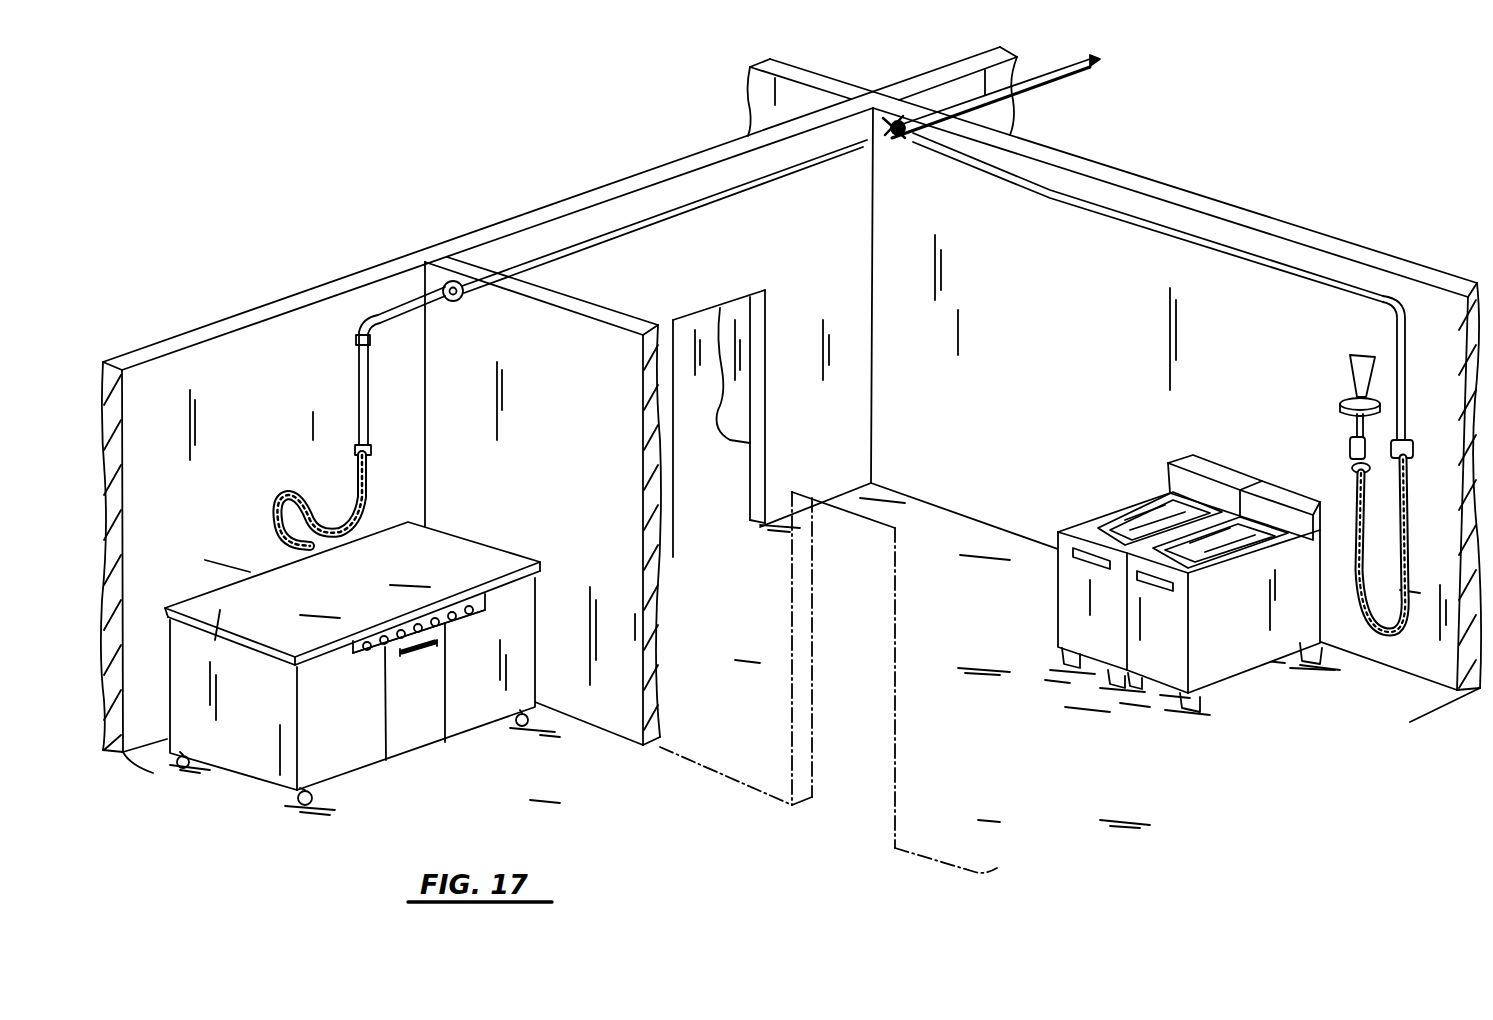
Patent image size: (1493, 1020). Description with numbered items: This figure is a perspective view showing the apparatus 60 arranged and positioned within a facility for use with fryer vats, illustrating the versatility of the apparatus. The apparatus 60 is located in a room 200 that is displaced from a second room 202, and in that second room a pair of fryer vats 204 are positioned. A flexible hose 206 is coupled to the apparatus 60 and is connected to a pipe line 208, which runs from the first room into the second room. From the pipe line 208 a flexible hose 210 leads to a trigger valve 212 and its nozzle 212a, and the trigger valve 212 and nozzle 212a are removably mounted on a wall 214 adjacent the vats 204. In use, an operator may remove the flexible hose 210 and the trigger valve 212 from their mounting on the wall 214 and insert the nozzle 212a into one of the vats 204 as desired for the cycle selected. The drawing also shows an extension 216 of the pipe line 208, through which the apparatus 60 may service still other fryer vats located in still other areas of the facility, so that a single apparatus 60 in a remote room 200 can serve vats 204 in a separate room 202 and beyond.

The apparatus 60 is at (368, 773).
The room 200 is at (288, 335).
The room 202 is at (1112, 263).
The fryer vats 204 is at (1147, 613).
The flexible hose 206 is at (360, 462).
The pipe line 208 is at (757, 187).
The flexible hose 210 is at (1382, 634).
The trigger valve 212 is at (1350, 444).
The nozzle 212a is at (1355, 377).
The wall 214 is at (1172, 343).
The extension 216 is at (1047, 83).